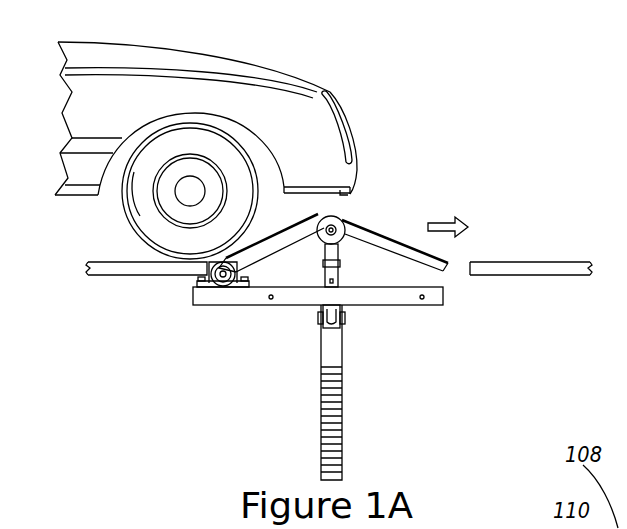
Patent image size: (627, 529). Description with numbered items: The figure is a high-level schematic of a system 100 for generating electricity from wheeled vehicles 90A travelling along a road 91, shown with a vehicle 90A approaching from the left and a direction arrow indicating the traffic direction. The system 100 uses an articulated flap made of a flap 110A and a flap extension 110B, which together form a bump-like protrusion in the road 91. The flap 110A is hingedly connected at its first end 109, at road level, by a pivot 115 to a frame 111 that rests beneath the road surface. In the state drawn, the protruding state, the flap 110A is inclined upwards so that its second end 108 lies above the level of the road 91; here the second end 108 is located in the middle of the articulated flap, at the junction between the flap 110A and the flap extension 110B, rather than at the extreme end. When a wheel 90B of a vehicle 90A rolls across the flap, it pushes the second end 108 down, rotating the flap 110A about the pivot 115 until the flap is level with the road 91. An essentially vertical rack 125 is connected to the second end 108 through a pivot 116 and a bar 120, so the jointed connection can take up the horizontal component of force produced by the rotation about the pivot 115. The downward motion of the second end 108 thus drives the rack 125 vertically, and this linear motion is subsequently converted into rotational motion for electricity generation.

The wheeled vehicle 90A is at (300, 72).
The wheel 90B is at (128, 227).
The road 91 is at (86, 275).
The system 100 is at (71, 525).
The second end 108 is at (453, 280).
The first end 109 is at (243, 268).
The flap 110A is at (294, 228).
The flap extension 110B is at (379, 238).
The frame 111 is at (190, 292).
The pivot 115 is at (227, 282).
The pivot 116 is at (321, 236).
The bar 120 is at (341, 278).
The rack 125 is at (335, 350).